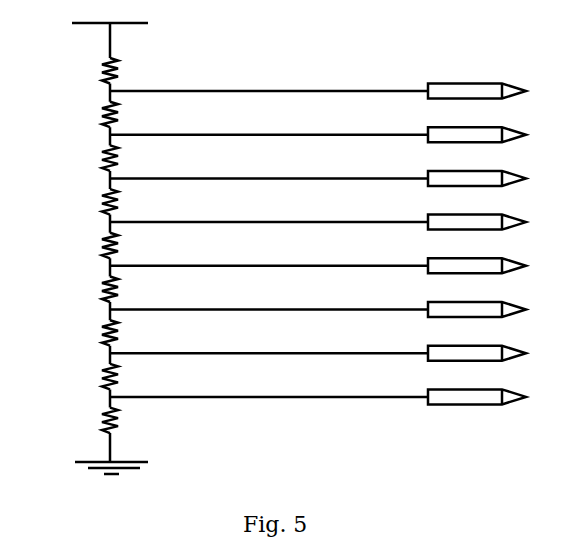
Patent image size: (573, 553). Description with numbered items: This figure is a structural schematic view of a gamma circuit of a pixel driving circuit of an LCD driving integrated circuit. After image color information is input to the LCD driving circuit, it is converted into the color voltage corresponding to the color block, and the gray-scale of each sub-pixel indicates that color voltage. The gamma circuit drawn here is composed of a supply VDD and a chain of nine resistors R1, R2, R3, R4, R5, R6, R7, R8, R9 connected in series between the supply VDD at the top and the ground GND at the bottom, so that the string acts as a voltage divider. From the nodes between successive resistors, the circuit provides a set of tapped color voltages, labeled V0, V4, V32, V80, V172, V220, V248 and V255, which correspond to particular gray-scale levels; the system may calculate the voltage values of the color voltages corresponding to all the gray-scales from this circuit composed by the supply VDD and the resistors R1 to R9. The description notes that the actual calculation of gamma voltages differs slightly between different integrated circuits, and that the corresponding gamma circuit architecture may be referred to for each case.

The resistor R1 is at (155, 64).
The resistor R2 is at (100, 115).
The resistor R3 is at (100, 158).
The resistor R4 is at (100, 202).
The resistor R5 is at (100, 245).
The resistor R6 is at (100, 290).
The resistor R7 is at (100, 333).
The resistor R8 is at (100, 377).
The resistor R9 is at (100, 421).
The reference voltage output V0 is at (318, 84).
The reference voltage output V4 is at (318, 128).
The reference voltage output V32 is at (318, 171).
The reference voltage output V80 is at (318, 215).
The reference voltage output V172 is at (318, 258).
The reference voltage output V220 is at (318, 303).
The reference voltage output V248 is at (318, 346).
The reference voltage output V255 is at (318, 390).
The element VDD is at (110, 16).
The ground connection GND is at (111, 476).